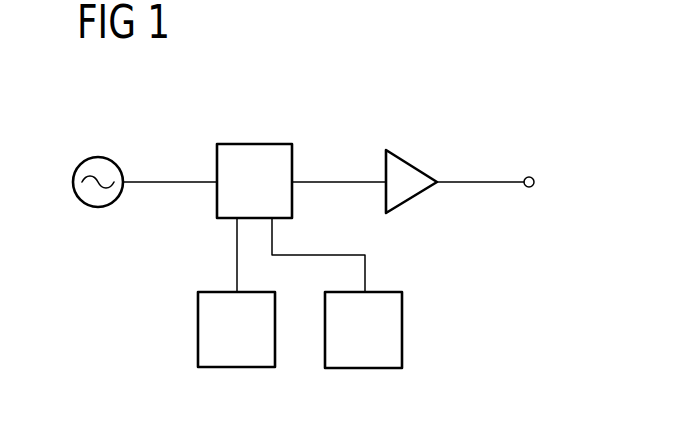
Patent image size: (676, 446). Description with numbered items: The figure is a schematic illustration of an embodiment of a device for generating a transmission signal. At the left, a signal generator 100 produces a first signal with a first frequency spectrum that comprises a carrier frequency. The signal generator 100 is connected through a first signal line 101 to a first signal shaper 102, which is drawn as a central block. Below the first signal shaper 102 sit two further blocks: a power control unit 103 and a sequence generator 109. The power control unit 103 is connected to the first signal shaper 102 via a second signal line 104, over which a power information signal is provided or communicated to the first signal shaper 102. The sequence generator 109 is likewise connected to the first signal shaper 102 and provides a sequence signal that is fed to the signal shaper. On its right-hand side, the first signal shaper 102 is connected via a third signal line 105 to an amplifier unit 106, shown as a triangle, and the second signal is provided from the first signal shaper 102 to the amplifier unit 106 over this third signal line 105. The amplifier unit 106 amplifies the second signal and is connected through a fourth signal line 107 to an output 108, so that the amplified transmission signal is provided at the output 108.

The signal generator 100 is at (98, 157).
The first signal line 101 is at (170, 182).
The first signal shaper 102 is at (255, 144).
The power control unit 103 is at (198, 330).
The second signal line 104 is at (237, 255).
The third signal line 105 is at (338, 182).
The amplifier unit 106 is at (407, 197).
The fourth signal line 107 is at (480, 182).
The output 108 is at (529, 188).
The sequence generator 109 is at (402, 328).